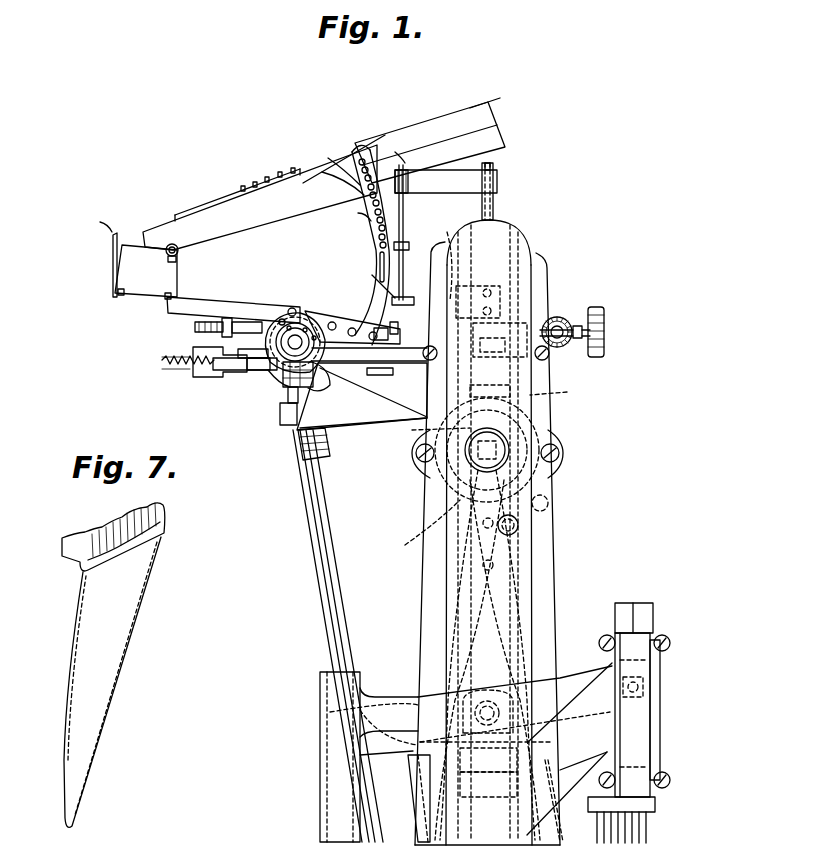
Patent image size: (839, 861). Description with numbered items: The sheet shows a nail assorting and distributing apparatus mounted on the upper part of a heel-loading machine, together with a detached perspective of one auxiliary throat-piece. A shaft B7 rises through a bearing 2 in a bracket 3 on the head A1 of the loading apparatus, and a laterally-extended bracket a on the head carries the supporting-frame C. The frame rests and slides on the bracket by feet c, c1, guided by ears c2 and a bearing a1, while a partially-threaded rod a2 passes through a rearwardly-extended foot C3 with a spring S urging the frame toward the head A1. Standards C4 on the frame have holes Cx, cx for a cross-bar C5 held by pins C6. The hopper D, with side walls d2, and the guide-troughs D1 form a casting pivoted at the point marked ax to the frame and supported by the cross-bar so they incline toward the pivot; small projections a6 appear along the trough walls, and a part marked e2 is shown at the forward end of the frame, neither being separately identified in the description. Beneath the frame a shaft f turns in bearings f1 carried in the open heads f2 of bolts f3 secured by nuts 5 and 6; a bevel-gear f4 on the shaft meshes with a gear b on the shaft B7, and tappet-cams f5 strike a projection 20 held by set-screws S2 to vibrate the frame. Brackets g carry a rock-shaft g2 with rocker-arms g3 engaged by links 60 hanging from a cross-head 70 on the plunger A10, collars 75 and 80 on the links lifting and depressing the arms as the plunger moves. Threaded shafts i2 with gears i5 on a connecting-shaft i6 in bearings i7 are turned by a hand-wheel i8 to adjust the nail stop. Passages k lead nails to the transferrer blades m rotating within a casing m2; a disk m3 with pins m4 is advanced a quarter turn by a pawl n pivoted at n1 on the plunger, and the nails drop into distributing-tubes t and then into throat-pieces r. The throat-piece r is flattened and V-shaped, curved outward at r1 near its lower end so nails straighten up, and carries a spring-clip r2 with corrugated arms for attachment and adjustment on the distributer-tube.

In FIG. 1, the hopper D is at (430, 141).
In FIG. 1, the side walls d2 is at (479, 104).
In FIG. 1, the guide-troughs D1 is at (208, 208).
In FIG. 1, the pins a6 is at (272, 172).
In FIG. 1, the supporting-frame C is at (135, 300).
In FIG. 1, the side plate e2 is at (107, 251).
In FIG. 1, the pivot bushing ax is at (180, 251).
In FIG. 1, the set-screws S2 is at (240, 322).
In FIG. 1, the rearwardly-extended foot C3 is at (195, 352).
In FIG. 1, the spring S is at (175, 370).
In FIG. 1, the partially-threaded rod a2 is at (218, 365).
In FIG. 1, the foot c is at (248, 360).
In FIG. 1, the bearing a1 is at (262, 372).
In FIG. 1, the gear b is at (275, 380).
In FIG. 1, the shaft f is at (295, 320).
In FIG. 1, the open heads f2 is at (280, 318).
In FIG. 1, the tappet-cams f5 is at (289, 325).
In FIG. 1, the bearings f1 is at (305, 326).
In FIG. 1, the bevel-gear f4 is at (316, 335).
In FIG. 1, the projection 20 is at (285, 312).
In FIG. 1, the nut 6 is at (285, 380).
In FIG. 1, the bolts f3 is at (288, 400).
In FIG. 1, the nut 5 is at (322, 390).
In FIG. 1, the laterally-extended bracket a is at (355, 388).
In FIG. 1, the ears c2 is at (380, 372).
In FIG. 1, the foot c1 is at (380, 334).
In FIG. 1, the bracket 3 is at (355, 420).
In FIG. 1, the standards C4 is at (373, 252).
In FIG. 1, the cross-bar C5 is at (342, 163).
In FIG. 1, the pins C6 is at (342, 165).
In FIG. 1, the holes Cx is at (352, 216).
In FIG. 1, the holes cx is at (392, 150).
In FIG. 1, the collars 75 is at (375, 278).
In FIG. 1, the links 60 is at (408, 200).
In FIG. 1, the cross-head 70 is at (495, 175).
In FIG. 1, the brackets g is at (405, 262).
In FIG. 1, the collars 80 is at (403, 242).
In FIG. 1, the rock-shaft g2 is at (446, 255).
In FIG. 1, the rocker-arms g3 is at (402, 297).
In FIG. 1, the head A1 is at (542, 260).
In FIG. 1, the vertically-reciprocating plunger A10 is at (523, 250).
In FIG. 1, the gears i5 is at (552, 318).
In FIG. 1, the connecting-shaft i6 is at (576, 326).
In FIG. 1, the threaded shafts i2 is at (588, 326).
In FIG. 1, the hand-wheel i8 is at (604, 312).
In FIG. 1, the bearings i7 is at (560, 360).
In FIG. 1, the blades m is at (520, 412).
In FIG. 1, the projections m4 is at (530, 425).
In FIG. 1, the disk m3 is at (423, 435).
In FIG. 1, the cylindrical casing m2 is at (415, 527).
In FIG. 1, the passages k is at (525, 388).
In FIG. 1, the spring-controlled pawl n is at (548, 498).
In FIG. 1, the pivot n1 is at (520, 527).
In FIG. 1, the distributing-tubes t is at (430, 652).
In FIG. 1, the shaft B7 is at (325, 570).
In FIG. 1, the bearing 2 is at (285, 428).
In FIG. 1, the auxiliary tube r is at (412, 773).
In FIG. 7, the auxiliary tube r is at (112, 640).
In FIG. 7, the curved portion r1 is at (62, 738).
In FIG. 7, the spring-clip r2 is at (157, 504).